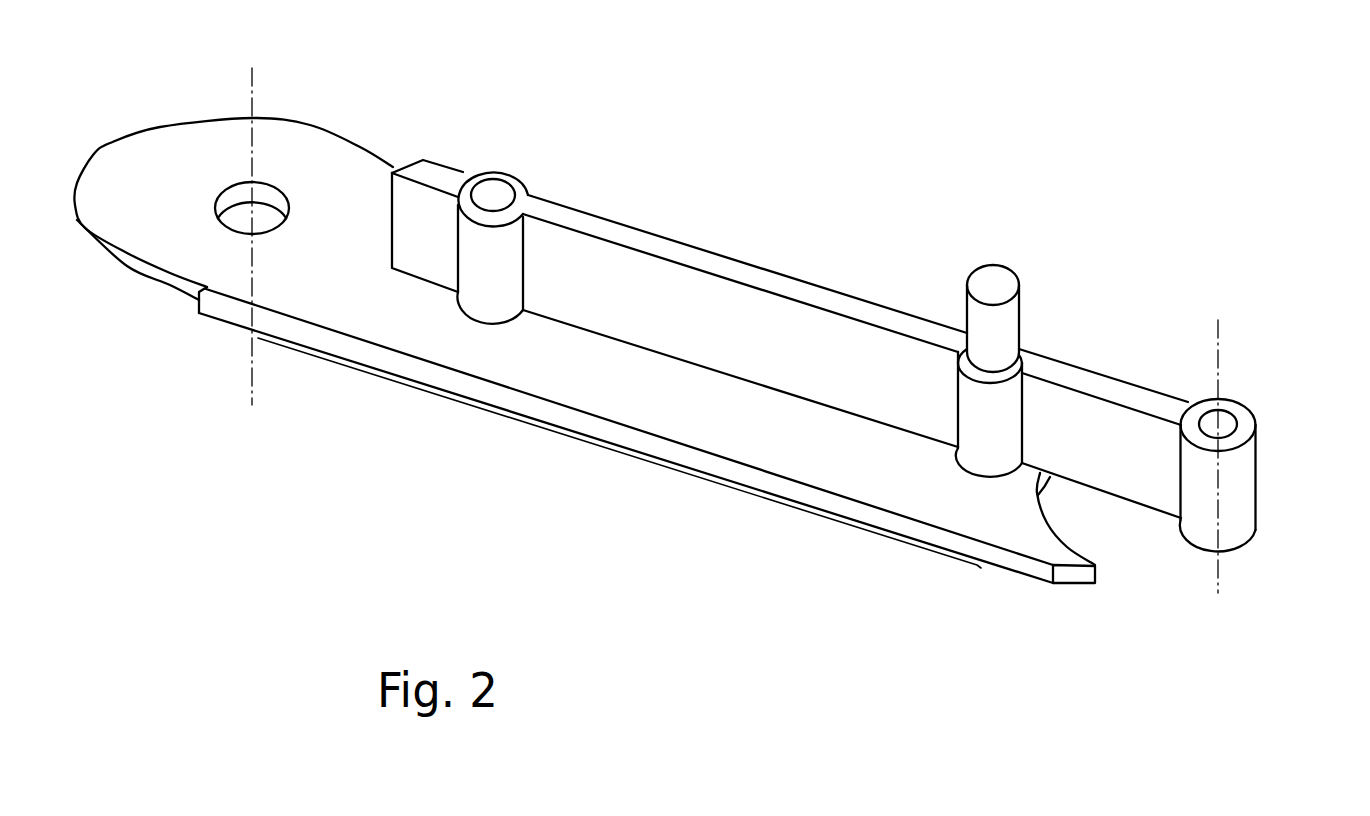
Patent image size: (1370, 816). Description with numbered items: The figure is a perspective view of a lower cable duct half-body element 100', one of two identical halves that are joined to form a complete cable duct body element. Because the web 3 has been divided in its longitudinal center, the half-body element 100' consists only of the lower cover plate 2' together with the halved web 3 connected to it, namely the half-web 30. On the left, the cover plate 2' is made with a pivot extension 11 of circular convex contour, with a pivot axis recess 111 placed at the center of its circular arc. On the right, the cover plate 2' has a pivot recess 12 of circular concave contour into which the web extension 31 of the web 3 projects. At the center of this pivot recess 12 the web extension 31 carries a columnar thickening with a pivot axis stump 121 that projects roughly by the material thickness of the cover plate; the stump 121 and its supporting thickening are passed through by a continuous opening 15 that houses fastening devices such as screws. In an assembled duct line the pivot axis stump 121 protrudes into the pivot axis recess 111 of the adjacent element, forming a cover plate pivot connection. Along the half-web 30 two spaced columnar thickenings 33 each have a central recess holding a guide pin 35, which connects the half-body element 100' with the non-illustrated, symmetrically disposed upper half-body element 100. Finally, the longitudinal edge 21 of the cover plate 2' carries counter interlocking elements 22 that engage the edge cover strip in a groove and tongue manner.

The upper cable duct half-body element 100 is at (722, 373).
The lower cable duct half-body element 100' is at (584, 317).
The pivot extension 11 is at (167, 177).
The pivot axis recess 111 is at (268, 222).
The lower cover plate 2' is at (629, 427).
The longitudinal edge 21 is at (608, 433).
The counter interlocking element 22 is at (727, 487).
The web 3 is at (840, 362).
The half-web 30 is at (777, 283).
The web extension 31 is at (1082, 430).
The columnar thickening 33 is at (517, 173).
The guide pin 35 is at (986, 286).
The pivot recess 12 is at (1077, 508).
The pivot axis stump 121 is at (1195, 537).
The continuous opening 15 is at (1228, 428).